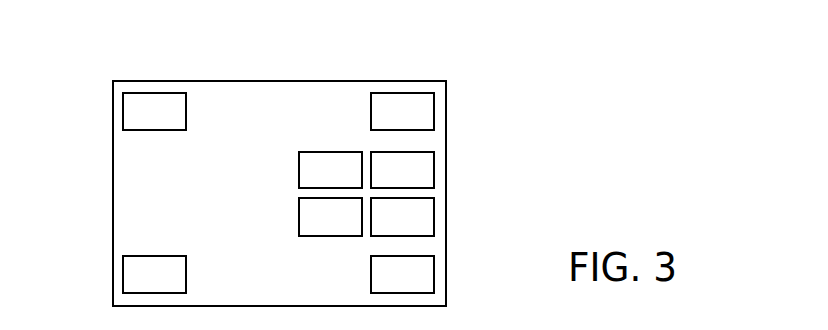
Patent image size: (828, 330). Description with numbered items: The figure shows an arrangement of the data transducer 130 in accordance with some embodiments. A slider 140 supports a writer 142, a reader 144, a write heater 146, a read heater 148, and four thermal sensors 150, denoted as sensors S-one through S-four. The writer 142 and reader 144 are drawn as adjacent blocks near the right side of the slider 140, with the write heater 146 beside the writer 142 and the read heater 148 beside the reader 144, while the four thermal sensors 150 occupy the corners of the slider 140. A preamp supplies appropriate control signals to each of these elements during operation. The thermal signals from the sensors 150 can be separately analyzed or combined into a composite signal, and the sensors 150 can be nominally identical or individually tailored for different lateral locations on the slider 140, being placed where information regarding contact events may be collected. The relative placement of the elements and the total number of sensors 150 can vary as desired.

The transducer 130 is at (580, 98).
The slider 140 is at (282, 80).
The writer 142 is at (434, 167).
The reader 144 is at (434, 212).
The write heater 146 is at (299, 168).
The read heater 148 is at (299, 213).
The thermal sensors 150 is at (123, 107).